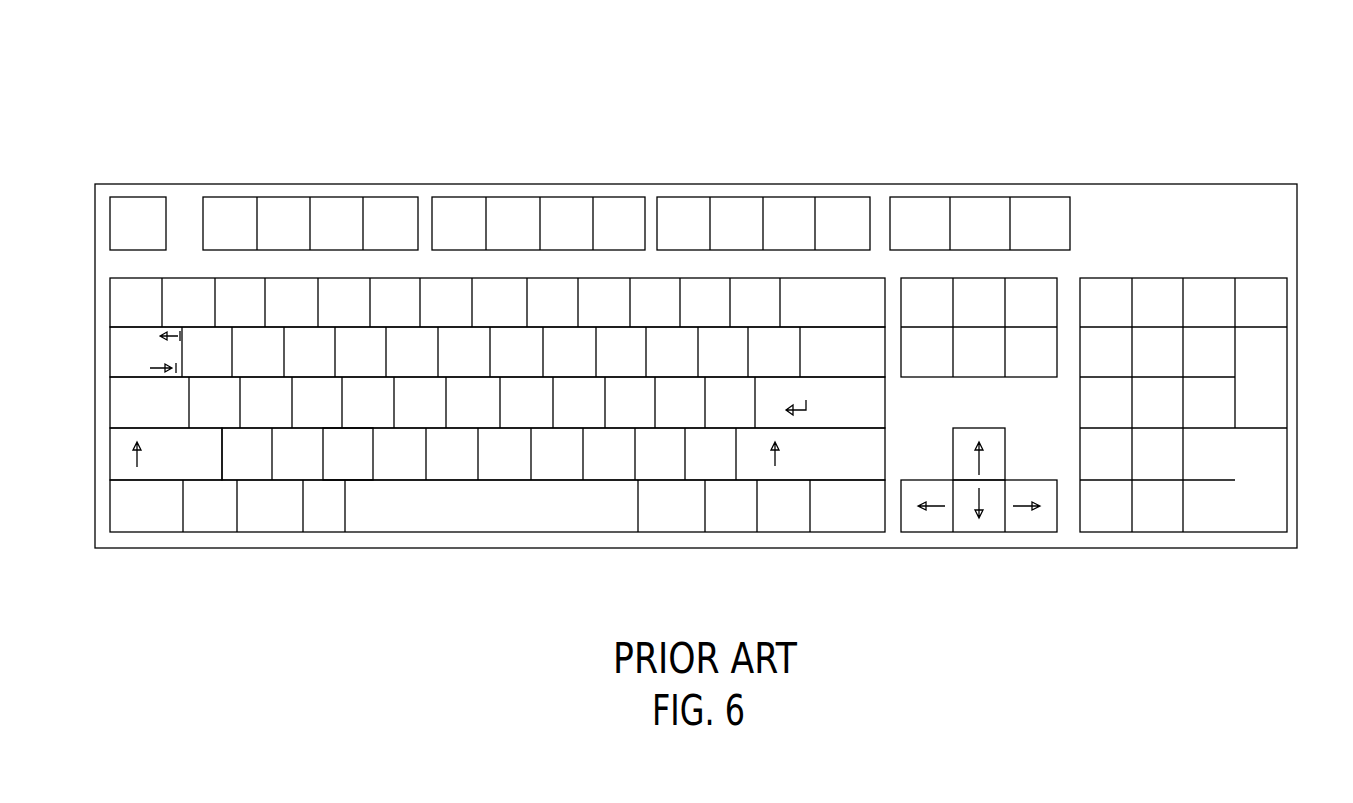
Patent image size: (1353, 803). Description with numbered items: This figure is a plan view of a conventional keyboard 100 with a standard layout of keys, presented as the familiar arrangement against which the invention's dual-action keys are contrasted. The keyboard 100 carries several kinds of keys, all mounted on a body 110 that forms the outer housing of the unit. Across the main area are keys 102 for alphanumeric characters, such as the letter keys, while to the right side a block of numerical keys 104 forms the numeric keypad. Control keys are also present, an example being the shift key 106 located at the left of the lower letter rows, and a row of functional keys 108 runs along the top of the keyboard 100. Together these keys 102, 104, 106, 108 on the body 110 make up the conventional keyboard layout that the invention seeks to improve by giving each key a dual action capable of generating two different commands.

The keyboard 100 is at (275, 70).
The keys for alphanumeric characters 102 is at (350, 468).
The numerical keys 104 is at (1125, 340).
The shift key 106 is at (182, 468).
The functional keys 108 is at (447, 205).
The keyboard housing 110 is at (137, 184).